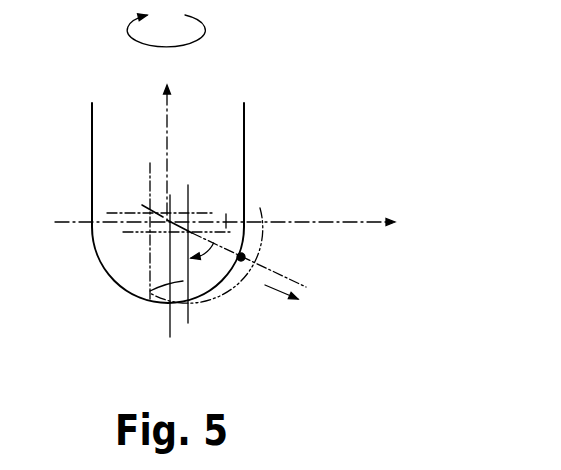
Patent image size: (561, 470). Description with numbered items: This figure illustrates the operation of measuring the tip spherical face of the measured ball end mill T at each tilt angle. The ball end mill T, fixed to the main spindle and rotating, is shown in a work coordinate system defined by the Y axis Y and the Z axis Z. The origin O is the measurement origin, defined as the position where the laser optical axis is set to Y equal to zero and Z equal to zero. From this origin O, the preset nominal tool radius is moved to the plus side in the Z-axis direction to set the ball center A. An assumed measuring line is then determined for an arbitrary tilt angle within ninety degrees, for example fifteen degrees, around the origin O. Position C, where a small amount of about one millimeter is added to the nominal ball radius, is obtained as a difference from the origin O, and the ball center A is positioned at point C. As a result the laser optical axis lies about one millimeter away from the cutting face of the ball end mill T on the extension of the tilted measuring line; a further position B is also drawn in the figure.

The ball end mill T is at (104, 148).
The ball center A is at (328, 157).
The point B (Y1, Z1) B is at (330, 188).
The position C is at (151, 209).
The origin (laser optical axis) O is at (442, 348).
The Y-axis Y is at (433, 226).
The Z-axis Z is at (178, 76).